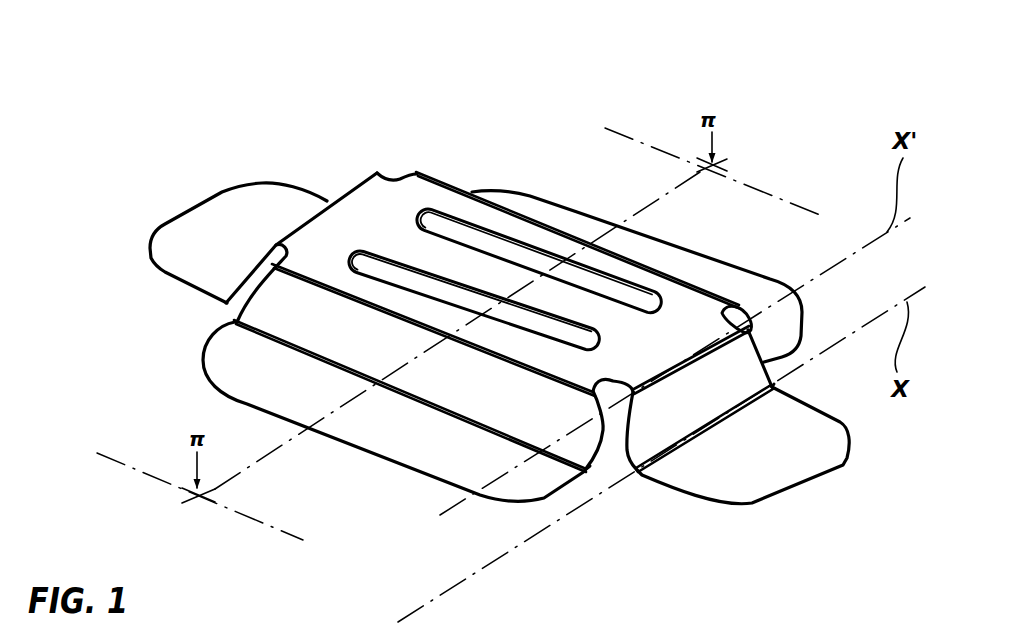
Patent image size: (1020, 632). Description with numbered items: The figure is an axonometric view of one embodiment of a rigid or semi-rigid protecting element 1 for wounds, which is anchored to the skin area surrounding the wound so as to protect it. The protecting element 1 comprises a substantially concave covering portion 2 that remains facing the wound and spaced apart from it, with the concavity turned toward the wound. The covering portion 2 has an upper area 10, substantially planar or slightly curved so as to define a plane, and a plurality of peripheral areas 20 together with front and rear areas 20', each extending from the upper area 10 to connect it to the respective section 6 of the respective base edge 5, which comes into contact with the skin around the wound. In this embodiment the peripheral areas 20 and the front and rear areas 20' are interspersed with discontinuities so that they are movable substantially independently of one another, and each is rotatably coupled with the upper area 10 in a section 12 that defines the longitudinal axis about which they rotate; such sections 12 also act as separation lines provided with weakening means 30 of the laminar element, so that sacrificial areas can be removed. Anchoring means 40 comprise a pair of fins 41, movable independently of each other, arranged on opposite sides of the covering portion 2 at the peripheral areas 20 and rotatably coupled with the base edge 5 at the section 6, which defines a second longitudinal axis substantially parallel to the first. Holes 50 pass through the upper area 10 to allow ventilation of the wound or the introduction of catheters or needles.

The protecting element 1 is at (777, 79).
The covering portion 2 is at (438, 124).
The base edge 5 is at (230, 323).
The section 6 is at (773, 378).
The upper area 10 is at (684, 283).
The section 12 is at (357, 186).
The peripheral area 20 is at (606, 470).
The front and rear area 20' is at (649, 477).
The weakening means 30 is at (351, 300).
The anchoring means 40 is at (192, 173).
The fin 41 is at (255, 204).
The hole 50 is at (470, 236).